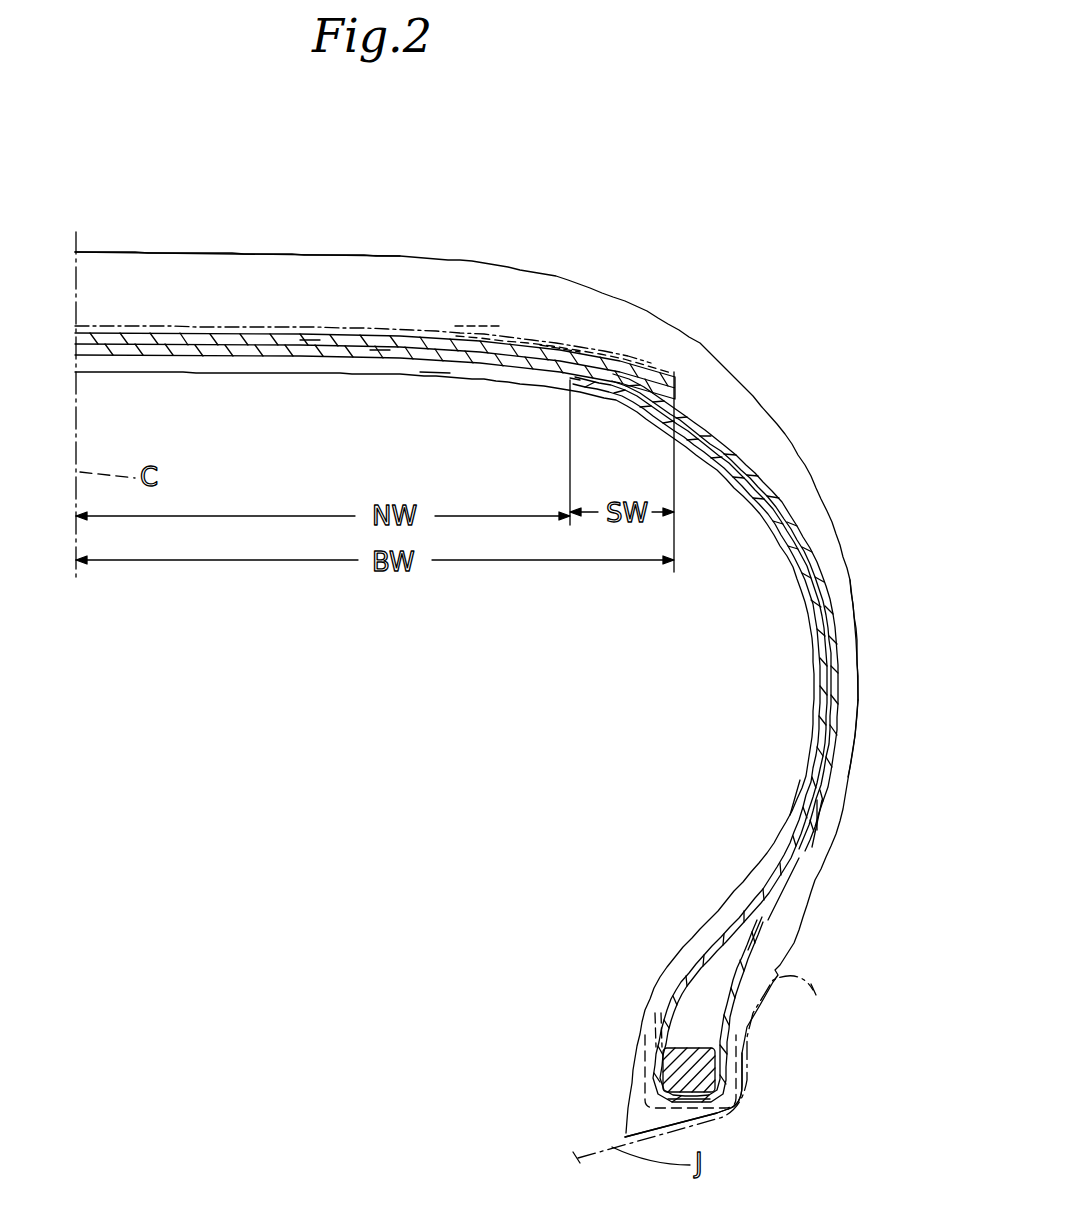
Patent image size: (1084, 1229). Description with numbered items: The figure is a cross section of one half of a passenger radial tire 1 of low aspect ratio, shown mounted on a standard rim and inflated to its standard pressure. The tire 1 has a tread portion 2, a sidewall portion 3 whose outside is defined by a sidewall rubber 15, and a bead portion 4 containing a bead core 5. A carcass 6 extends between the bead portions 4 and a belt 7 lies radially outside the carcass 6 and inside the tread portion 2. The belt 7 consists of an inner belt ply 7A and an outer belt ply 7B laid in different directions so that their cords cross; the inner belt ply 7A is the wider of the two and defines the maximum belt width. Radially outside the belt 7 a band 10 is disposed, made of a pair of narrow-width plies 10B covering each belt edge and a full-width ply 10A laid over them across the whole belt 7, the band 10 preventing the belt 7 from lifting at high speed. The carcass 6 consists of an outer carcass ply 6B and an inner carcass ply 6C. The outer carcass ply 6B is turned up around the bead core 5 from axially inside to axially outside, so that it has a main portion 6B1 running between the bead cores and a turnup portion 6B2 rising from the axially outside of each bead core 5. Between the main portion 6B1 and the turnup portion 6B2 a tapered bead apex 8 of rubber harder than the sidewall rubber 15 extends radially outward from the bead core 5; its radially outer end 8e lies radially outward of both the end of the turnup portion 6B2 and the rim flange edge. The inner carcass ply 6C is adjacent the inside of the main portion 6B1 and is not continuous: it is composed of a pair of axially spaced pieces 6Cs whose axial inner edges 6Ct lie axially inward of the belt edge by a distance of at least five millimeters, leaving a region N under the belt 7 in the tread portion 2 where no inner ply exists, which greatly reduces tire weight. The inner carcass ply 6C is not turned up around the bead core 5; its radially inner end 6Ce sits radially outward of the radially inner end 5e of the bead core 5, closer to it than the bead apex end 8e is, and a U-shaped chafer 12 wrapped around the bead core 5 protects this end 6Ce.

The tire 1 is at (720, 345).
The tread portion 2 is at (192, 270).
The sidewall portion 3 is at (847, 677).
The bead portion 4 is at (643, 988).
The bead core 5 is at (703, 1068).
The radially inner end of the bead core 5e is at (687, 1093).
The carcass 6 is at (652, 648).
The outer carcass ply 6B is at (827, 678).
The main portion 6B1 is at (817, 817).
The turnup portion 6B2 is at (763, 935).
The inner carcass ply 6C is at (813, 625).
The piece of the inner carcass ply 6Cs is at (807, 777).
The axial inner edge of the piece 6Ct is at (568, 383).
The end of the inner carcass ply 6Ce is at (650, 1060).
The belt 7 is at (352, 476).
The inner belt ply 7A is at (390, 353).
The outer belt ply 7B is at (323, 340).
The bead apex 8 is at (713, 960).
The radially outer end of the bead apex 8e is at (812, 847).
The band 10 is at (650, 215).
The full-width ply 10A is at (513, 333).
The narrow-width ply 10B is at (552, 343).
The chafer 12 is at (740, 1045).
The sidewall rubber 15 is at (847, 710).
The region without inner carcass ply N is at (436, 373).